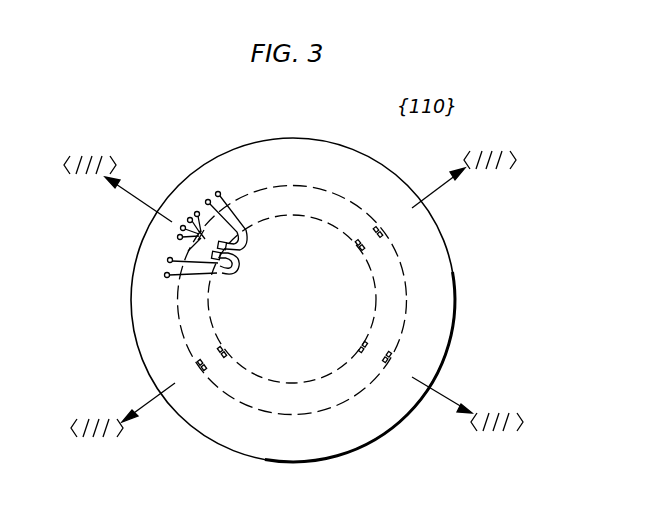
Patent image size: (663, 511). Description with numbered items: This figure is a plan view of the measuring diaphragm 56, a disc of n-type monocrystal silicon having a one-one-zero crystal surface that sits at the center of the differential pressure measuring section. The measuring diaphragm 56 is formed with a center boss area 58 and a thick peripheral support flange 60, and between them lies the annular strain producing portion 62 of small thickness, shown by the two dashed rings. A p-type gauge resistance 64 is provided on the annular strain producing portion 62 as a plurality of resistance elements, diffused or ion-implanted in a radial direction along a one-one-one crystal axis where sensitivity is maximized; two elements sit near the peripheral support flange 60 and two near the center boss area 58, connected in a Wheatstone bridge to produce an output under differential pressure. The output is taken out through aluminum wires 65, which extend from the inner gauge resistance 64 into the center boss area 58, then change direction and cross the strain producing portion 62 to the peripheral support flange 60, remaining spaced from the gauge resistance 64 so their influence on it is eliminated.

The measuring diaphragm 56 is at (133, 298).
The center boss area 58 is at (353, 280).
The peripheral support flange 60 is at (156, 230).
The annular strain producing portion 62 is at (278, 192).
The gauge resistance 64 is at (190, 362).
The aluminum wires 65 is at (222, 282).